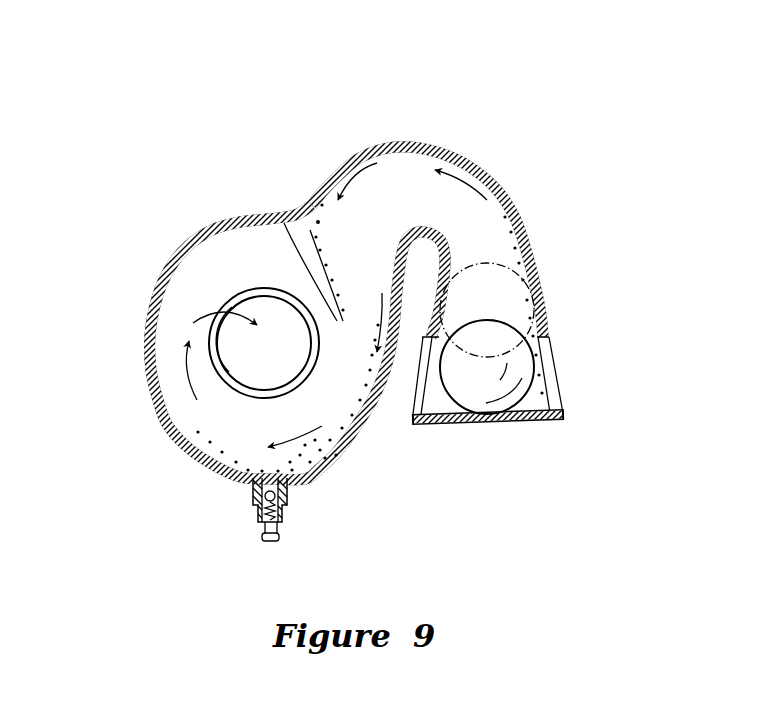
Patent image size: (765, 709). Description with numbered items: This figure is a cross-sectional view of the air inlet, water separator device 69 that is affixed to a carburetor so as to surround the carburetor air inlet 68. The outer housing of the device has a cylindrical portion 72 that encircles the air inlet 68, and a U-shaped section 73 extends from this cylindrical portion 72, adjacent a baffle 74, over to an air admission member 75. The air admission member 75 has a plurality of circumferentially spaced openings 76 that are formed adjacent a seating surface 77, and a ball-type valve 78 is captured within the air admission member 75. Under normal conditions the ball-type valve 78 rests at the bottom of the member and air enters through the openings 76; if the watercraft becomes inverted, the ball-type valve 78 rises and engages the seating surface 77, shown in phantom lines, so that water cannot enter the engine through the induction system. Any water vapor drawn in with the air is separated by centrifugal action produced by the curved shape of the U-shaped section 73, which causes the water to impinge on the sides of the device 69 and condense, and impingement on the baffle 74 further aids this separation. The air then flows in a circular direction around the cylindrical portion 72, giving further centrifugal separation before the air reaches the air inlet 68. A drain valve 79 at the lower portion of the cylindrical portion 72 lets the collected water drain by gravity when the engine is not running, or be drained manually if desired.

The air inlet 68 is at (255, 305).
The air inlet, water separator device 69 is at (344, 310).
The cylindrical portion 72 is at (140, 358).
The U-shaped section 73 is at (418, 160).
The baffle 74 is at (323, 267).
The air admission member 75 is at (547, 320).
The openings 76 is at (560, 401).
The seating surface 77 is at (521, 278).
The ball-type valve 78 is at (473, 392).
The drain valve 79 is at (258, 517).